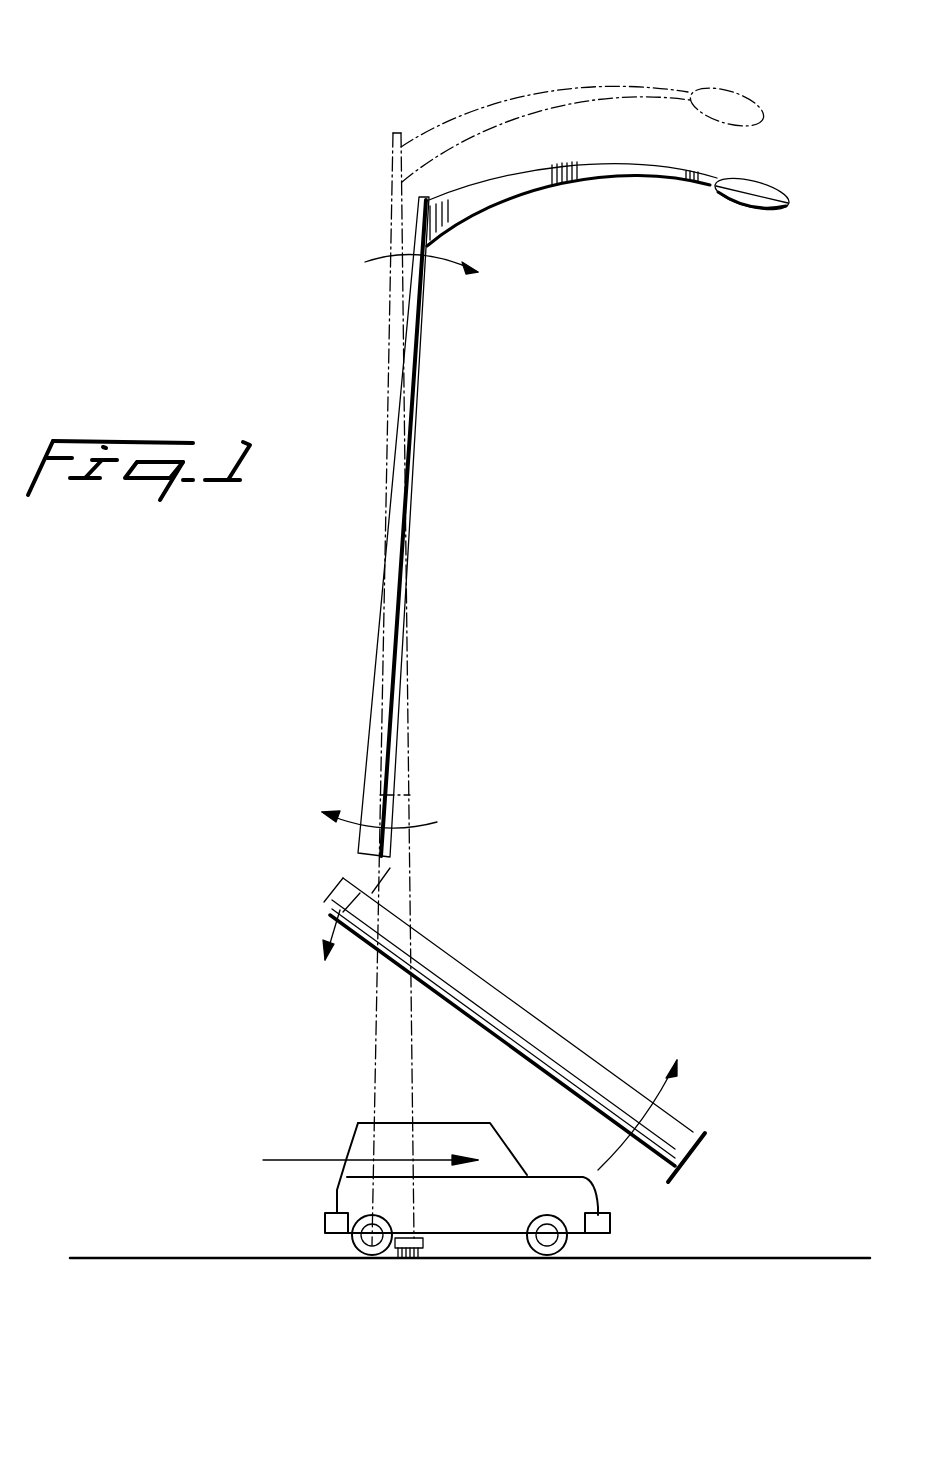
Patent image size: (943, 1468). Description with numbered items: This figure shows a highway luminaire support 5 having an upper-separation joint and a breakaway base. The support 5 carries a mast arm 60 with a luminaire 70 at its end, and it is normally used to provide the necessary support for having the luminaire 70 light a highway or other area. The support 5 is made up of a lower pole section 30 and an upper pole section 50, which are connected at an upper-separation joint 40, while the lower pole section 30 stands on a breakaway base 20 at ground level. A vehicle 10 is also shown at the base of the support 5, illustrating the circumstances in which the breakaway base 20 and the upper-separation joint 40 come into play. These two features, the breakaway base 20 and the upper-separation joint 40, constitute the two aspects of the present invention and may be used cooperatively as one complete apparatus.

The support 5 is at (390, 317).
The vehicle 10 is at (355, 1135).
The breakaway base 20 is at (403, 1257).
The lower pole section 30 is at (383, 990).
The upper-separation joint 40 is at (365, 870).
The upper pole section 50 is at (418, 420).
The mast arm 60 is at (577, 165).
The luminaire 70 is at (758, 203).